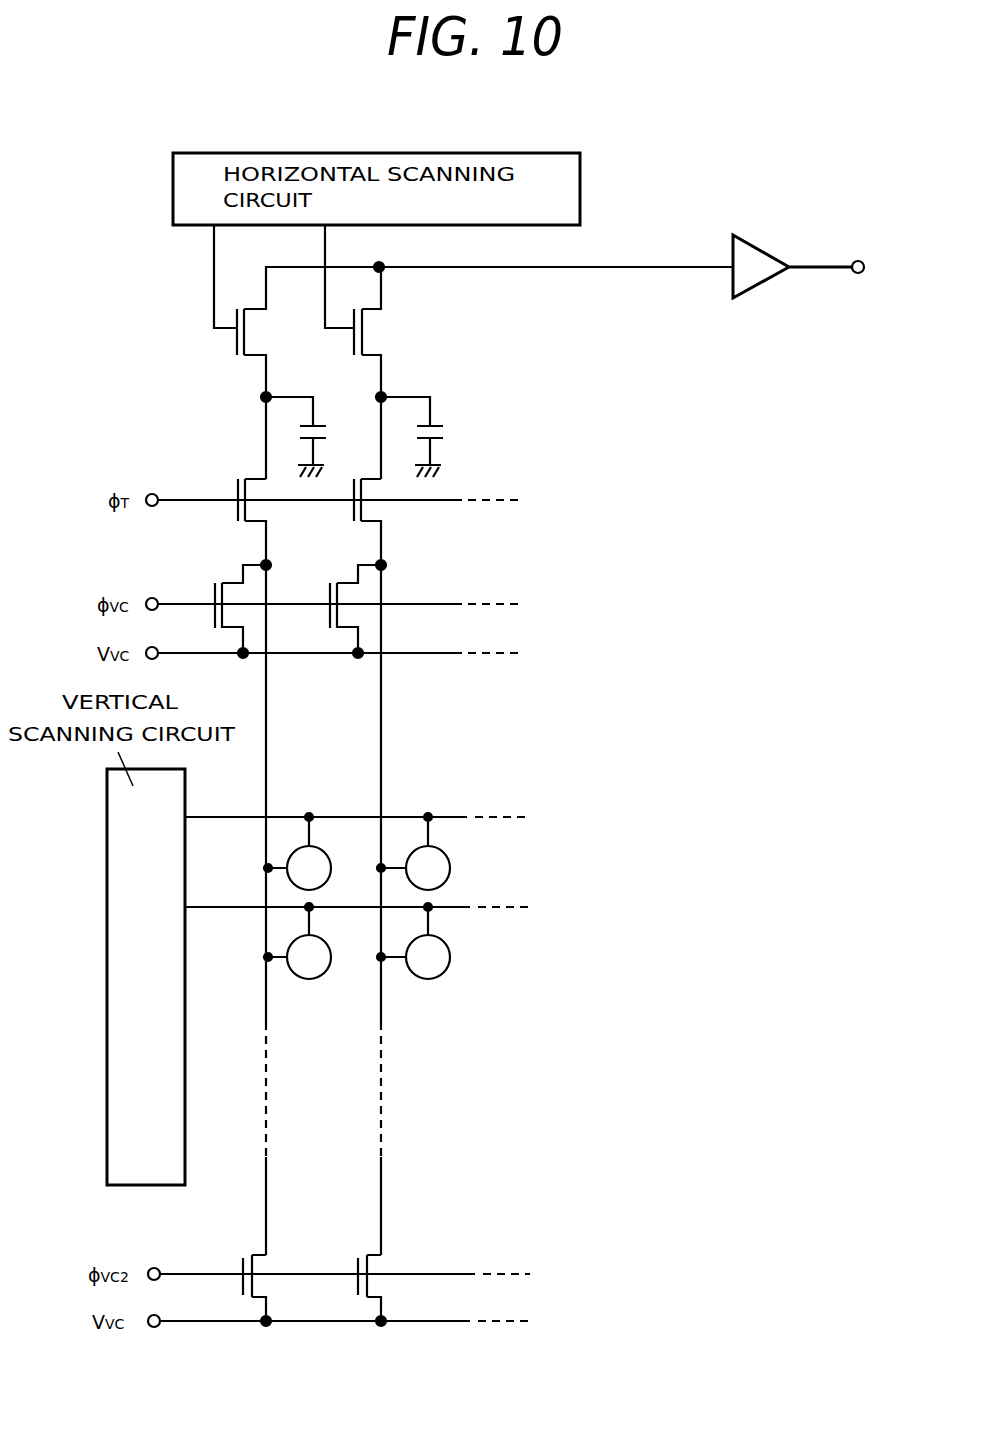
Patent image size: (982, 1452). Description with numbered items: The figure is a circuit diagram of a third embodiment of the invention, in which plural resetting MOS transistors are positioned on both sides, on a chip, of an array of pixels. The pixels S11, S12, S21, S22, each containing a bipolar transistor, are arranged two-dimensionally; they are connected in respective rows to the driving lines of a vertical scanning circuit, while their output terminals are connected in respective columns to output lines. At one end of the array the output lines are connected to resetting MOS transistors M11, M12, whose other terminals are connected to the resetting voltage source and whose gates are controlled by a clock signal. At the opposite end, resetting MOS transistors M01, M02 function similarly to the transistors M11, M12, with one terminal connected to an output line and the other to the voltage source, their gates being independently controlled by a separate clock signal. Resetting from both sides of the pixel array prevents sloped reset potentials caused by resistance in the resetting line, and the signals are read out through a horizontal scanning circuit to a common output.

The resetting MOS transistor M11 is at (232, 606).
The resetting MOS transistor M12 is at (347, 606).
The resetting MOS transistor M01 is at (241, 1275).
The resetting MOS transistor M02 is at (360, 1275).
The pixel S11 is at (297, 851).
The pixel S12 is at (413, 851).
The pixel S21 is at (297, 941).
The pixel S22 is at (413, 941).